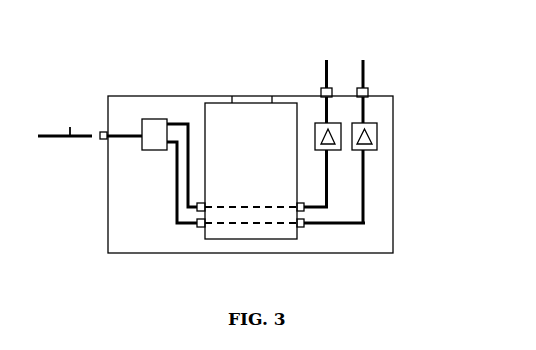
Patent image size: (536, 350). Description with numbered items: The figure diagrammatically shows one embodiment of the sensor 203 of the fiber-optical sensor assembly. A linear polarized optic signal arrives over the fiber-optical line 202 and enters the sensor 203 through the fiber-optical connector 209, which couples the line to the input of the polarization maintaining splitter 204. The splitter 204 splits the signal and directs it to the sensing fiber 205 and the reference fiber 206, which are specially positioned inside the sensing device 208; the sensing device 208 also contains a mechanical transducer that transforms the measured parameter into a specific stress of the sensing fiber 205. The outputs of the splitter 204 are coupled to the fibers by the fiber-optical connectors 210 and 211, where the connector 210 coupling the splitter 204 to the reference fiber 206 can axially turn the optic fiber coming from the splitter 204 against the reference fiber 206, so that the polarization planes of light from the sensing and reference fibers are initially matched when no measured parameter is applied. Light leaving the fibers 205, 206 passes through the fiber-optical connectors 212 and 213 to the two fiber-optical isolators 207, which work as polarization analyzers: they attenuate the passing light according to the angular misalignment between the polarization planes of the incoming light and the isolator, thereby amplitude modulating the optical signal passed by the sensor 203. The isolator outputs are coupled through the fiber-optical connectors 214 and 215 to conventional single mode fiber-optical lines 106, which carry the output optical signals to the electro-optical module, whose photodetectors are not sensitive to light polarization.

The single mode fiber-optical lines 106 is at (323, 88).
The fiber-optical line 202 is at (70, 127).
The sensor 203 is at (108, 223).
The polarization maintaining splitter 204 is at (153, 118).
The sensing fiber 205 is at (235, 222).
The reference fiber 206 is at (280, 208).
The fiber-optical isolators 207 is at (341, 150).
The sensing device 208 is at (218, 102).
The fiber-optical connector 209 is at (102, 131).
The fiber-optical connector 210 is at (177, 222).
The fiber-optical connector 211 is at (207, 223).
The fiber-optical connector 212 is at (304, 227).
The fiber-optical connector 213 is at (304, 211).
The fiber-optical connector 214 is at (321, 93).
The fiber-optical connector 215 is at (367, 88).